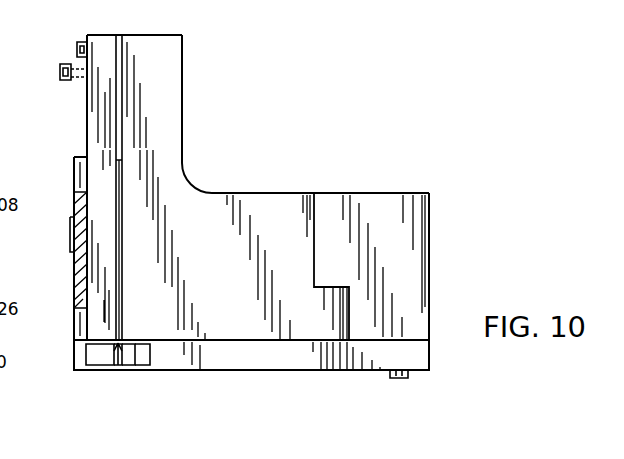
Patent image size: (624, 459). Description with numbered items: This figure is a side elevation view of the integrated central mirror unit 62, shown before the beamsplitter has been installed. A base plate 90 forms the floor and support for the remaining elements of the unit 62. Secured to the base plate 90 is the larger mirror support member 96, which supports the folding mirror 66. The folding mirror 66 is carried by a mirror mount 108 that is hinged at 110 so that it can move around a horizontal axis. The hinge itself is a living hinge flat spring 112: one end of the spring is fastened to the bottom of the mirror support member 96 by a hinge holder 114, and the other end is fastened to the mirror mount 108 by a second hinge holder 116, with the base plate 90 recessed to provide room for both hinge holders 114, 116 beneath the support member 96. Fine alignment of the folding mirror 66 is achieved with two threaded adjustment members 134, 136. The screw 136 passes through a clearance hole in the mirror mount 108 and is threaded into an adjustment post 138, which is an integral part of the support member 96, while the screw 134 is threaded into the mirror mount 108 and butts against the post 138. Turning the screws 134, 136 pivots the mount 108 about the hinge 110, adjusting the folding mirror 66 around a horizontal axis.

The integrated central mirror unit 62 is at (443, 243).
The folding mirror 66 is at (80, 265).
The base plate 90 is at (264, 360).
The mirror support member 96 is at (197, 208).
The mirror mount 108 is at (92, 136).
The hinge 110 is at (118, 368).
The living hinge flat spring 112 is at (137, 362).
The hinge holder 114 is at (138, 353).
The hinge holder 116 is at (100, 362).
The threaded adjustment member 134 is at (58, 69).
The threaded adjustment member 136 is at (78, 50).
The adjustment post 138 is at (163, 58).